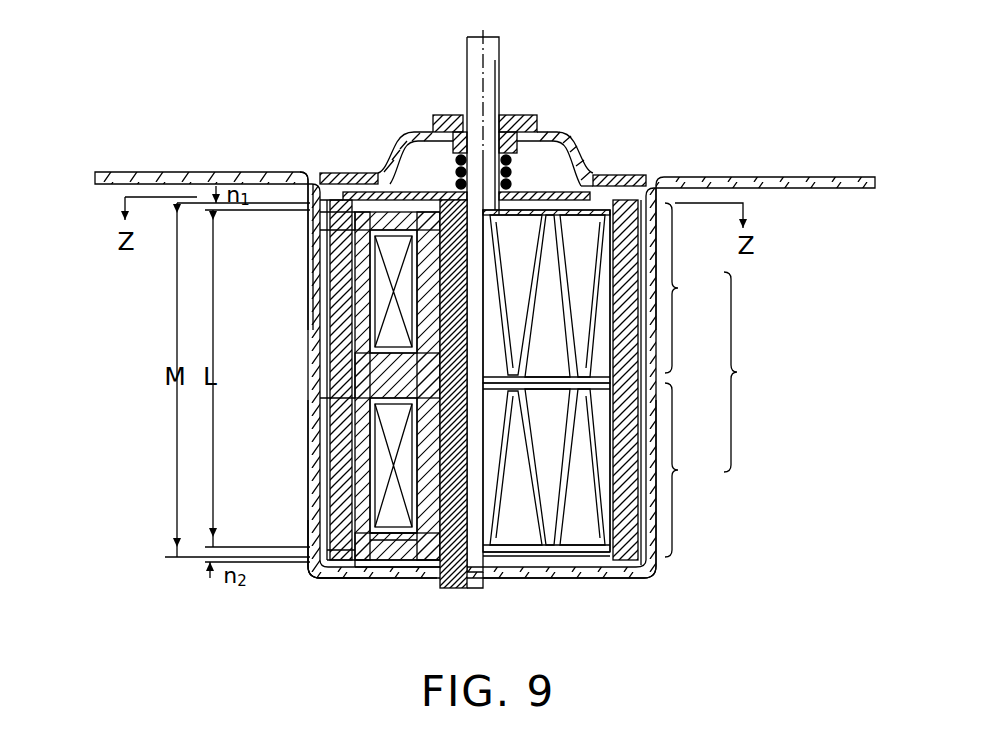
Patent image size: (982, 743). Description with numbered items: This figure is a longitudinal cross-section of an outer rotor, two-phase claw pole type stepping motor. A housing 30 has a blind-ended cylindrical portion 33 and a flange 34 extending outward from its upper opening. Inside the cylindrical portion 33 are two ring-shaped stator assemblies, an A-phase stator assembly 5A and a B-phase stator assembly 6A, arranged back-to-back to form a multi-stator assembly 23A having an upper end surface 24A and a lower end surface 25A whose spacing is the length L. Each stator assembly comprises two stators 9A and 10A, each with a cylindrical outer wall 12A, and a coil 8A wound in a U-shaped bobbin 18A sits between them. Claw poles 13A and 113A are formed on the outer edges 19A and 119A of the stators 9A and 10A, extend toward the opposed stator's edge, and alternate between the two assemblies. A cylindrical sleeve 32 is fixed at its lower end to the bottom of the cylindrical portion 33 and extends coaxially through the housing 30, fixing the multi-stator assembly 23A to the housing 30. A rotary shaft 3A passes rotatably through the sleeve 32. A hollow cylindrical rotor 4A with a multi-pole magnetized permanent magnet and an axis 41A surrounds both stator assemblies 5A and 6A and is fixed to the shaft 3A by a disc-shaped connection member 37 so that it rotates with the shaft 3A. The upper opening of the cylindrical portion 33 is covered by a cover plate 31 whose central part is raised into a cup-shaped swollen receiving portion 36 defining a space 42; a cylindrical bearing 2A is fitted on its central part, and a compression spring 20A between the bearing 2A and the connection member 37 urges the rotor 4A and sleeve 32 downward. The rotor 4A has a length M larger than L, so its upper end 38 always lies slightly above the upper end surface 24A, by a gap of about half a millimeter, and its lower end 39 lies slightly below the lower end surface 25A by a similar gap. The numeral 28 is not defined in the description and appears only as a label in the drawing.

The bearing 2A is at (447, 115).
The rotary shaft 3A is at (502, 84).
The rotor 4A is at (345, 395).
The A-phase stator assembly 5A is at (598, 293).
The B-phase stator assembly 6A is at (598, 470).
The coil 8A is at (330, 260).
The stator 9A is at (425, 150).
The stator 10A is at (338, 333).
The cylindrical outer wall 12A is at (360, 562).
The claw poles 13A is at (574, 205).
The bobbin 18A is at (330, 229).
The outer edge 19A is at (347, 186).
The compression spring 20A is at (548, 157).
The multi-stator assembly 23A is at (700, 381).
The upper end surface 24A is at (592, 180).
The lower end surface 25A is at (380, 562).
The housing corner 28 is at (314, 178).
The housing 30 is at (748, 172).
The cover plate 31 is at (362, 198).
The cylindrical sleeve 32 is at (457, 512).
The cylindrical portion 33 is at (626, 584).
The flange 34 is at (795, 186).
The swollen receiving portion 36 is at (428, 136).
The connection member 37 is at (358, 193).
The upper end of the rotor 38 is at (336, 194).
The lower end of the rotor 39 is at (315, 582).
The axis 41A is at (491, 62).
The space 42 is at (560, 152).
The claw poles 113A is at (650, 195).
The outer edge 119A is at (513, 548).